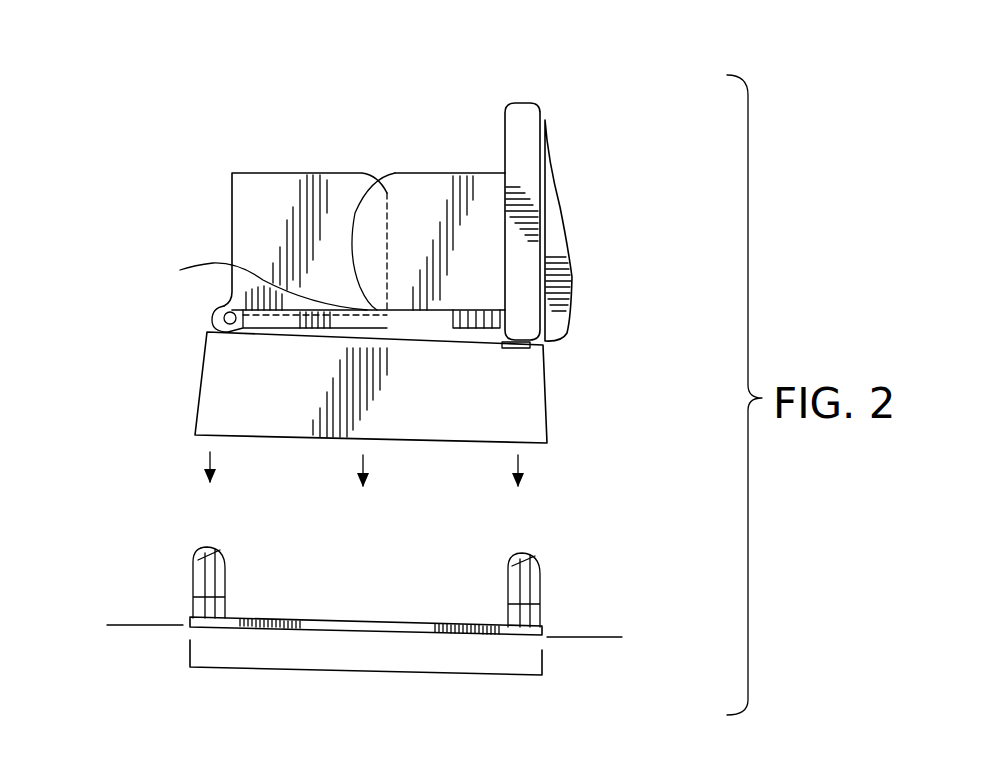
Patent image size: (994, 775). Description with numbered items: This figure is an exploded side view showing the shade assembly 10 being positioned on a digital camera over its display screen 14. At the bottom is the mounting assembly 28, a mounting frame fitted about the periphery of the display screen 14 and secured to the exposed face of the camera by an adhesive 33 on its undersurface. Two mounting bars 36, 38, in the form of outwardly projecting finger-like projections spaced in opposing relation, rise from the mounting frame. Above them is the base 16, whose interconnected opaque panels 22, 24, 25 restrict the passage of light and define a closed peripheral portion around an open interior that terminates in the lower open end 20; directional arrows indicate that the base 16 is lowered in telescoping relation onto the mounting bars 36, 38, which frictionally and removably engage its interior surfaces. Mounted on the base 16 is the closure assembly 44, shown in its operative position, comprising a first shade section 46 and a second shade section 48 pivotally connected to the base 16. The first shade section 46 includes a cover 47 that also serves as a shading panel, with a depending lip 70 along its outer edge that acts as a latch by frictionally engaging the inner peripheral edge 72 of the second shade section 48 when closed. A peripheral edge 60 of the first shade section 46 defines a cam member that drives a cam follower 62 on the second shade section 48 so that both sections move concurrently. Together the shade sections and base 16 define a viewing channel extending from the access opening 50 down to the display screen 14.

The shade assembly 10 is at (180, 245).
The display screen 14 is at (508, 682).
The base 16 is at (545, 367).
The inner open end 20 is at (528, 430).
The panel 22 is at (207, 372).
The panel 24 is at (545, 413).
The panel 25 is at (278, 410).
The mounting assembly 28 is at (193, 590).
The adhesive 33 is at (178, 636).
The mounting bar 36 is at (227, 590).
The mounting bar 38 is at (508, 598).
The closure assembly 44 is at (248, 170).
The first shade section 46 is at (547, 115).
The cover 47 is at (573, 250).
The second shade section 48 is at (232, 207).
The access opening 50 is at (380, 177).
The peripheral edge 60 is at (355, 180).
The cam follower 62 is at (180, 270).
The depending lip 70 is at (547, 132).
The inner peripheral edge 72 is at (213, 318).